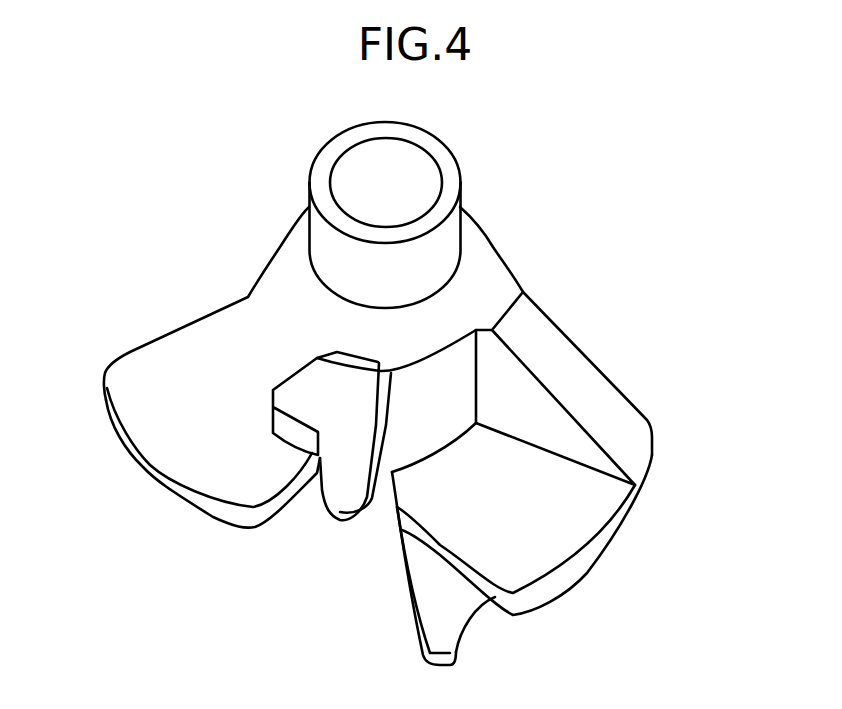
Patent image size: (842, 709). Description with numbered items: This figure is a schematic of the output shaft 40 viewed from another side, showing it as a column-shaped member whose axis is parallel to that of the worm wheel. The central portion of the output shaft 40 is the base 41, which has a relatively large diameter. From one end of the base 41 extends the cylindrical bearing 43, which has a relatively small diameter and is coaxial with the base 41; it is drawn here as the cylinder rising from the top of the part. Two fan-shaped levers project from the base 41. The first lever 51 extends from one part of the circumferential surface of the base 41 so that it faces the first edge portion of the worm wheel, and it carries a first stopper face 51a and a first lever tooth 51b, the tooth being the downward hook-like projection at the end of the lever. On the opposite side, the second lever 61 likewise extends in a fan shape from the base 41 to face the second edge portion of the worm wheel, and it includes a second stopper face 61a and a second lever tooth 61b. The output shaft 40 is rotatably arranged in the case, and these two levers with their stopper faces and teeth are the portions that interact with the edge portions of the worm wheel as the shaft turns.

The output shaft 40 is at (407, 397).
The base 41 is at (445, 388).
The cylindrical bearing 43 is at (410, 138).
The first lever 51 is at (565, 568).
The first stopper face 51a is at (568, 573).
The first lever tooth 51b is at (450, 642).
The second lever 61 is at (233, 477).
The second stopper face 61a is at (215, 502).
The second lever tooth 61b is at (340, 500).